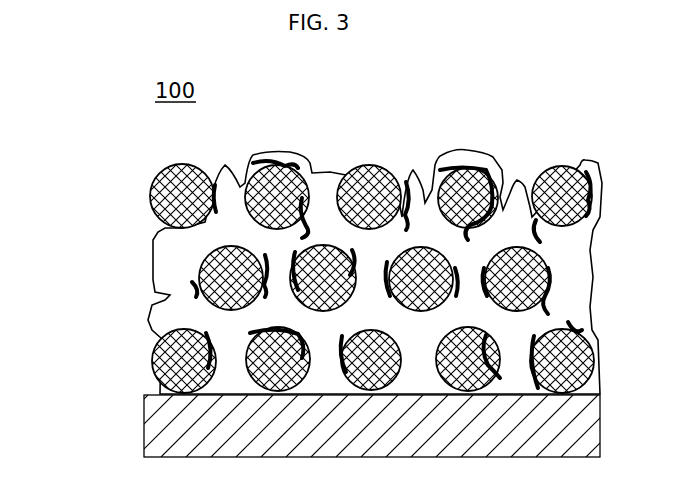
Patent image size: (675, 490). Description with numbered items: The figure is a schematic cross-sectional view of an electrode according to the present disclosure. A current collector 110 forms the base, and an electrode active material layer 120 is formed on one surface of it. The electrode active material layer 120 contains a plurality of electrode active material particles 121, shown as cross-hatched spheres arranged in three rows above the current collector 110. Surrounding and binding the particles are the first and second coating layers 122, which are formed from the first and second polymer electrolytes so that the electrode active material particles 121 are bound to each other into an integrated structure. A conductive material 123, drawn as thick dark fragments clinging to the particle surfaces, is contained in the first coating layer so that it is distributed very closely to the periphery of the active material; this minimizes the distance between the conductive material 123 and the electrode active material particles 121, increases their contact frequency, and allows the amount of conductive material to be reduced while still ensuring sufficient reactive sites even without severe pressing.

The current collector 110 is at (152, 423).
The electrode active material layer 120 is at (100, 290).
The electrode active material particles 121 is at (162, 192).
The first and second coating layers 122 is at (163, 253).
The conductive material 123 is at (155, 323).